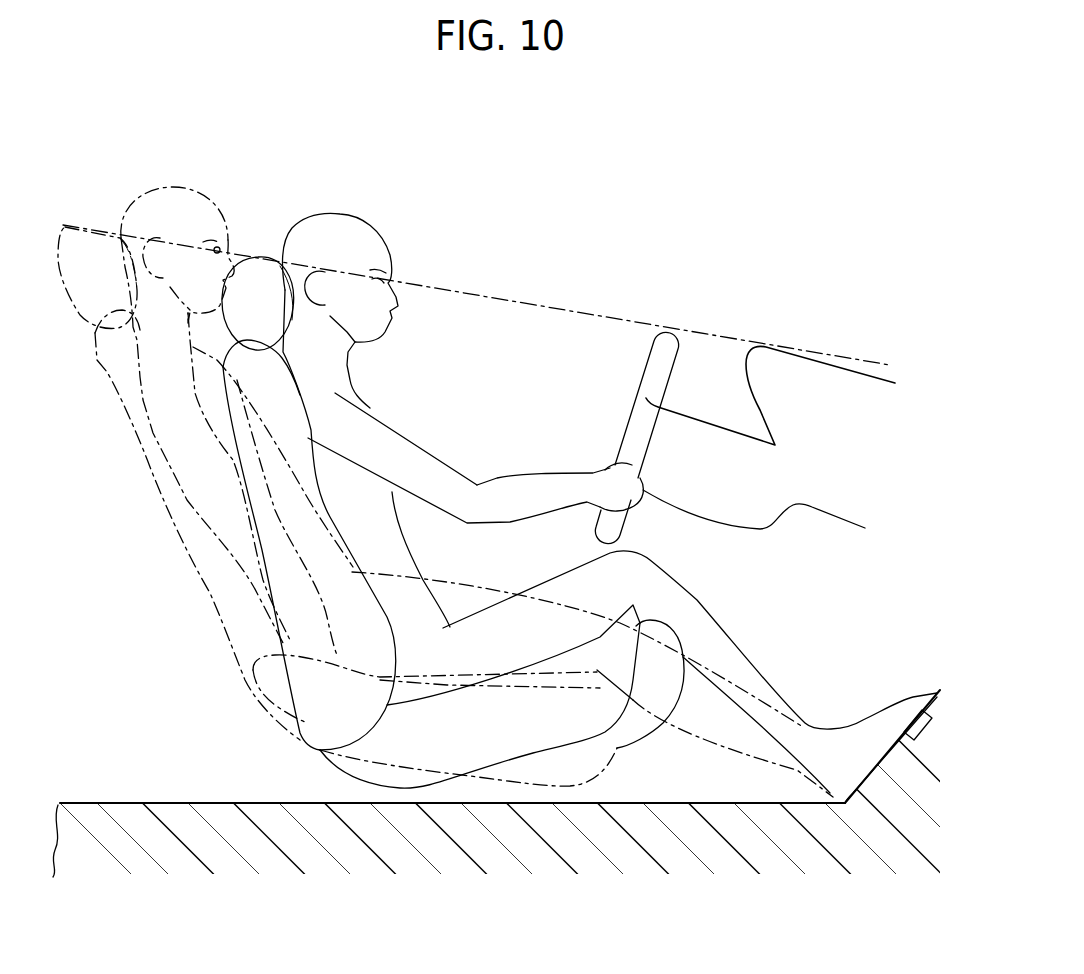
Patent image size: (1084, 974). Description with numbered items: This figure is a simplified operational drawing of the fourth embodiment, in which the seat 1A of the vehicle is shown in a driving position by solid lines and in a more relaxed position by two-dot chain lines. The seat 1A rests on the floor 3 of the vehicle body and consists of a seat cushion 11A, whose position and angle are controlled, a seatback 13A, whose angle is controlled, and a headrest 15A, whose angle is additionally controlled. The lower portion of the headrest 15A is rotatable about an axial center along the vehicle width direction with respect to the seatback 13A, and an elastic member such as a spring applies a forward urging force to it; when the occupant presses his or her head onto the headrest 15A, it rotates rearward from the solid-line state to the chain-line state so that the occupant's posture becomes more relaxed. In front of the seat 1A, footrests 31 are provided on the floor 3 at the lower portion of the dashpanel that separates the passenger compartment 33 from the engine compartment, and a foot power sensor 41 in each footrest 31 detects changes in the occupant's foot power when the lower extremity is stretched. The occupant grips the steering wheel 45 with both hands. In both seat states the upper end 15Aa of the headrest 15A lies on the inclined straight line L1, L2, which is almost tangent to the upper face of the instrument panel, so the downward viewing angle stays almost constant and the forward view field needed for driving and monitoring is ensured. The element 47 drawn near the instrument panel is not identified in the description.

The seat 1A is at (445, 528).
The floor 3 is at (165, 803).
The seat cushion 11A is at (471, 760).
The seatback 13A is at (287, 598).
The headrest 15A is at (182, 231).
The upper end of the headrest 15Aa is at (98, 233).
The footrest 31 is at (838, 806).
The passenger compartment 33 is at (852, 606).
The foot power sensor 41 is at (940, 692).
The steering wheel 45 is at (645, 375).
The instrument panel 47 is at (766, 366).
The inclined straight line L1 is at (603, 311).
The inclined straight line L2 is at (476, 295).